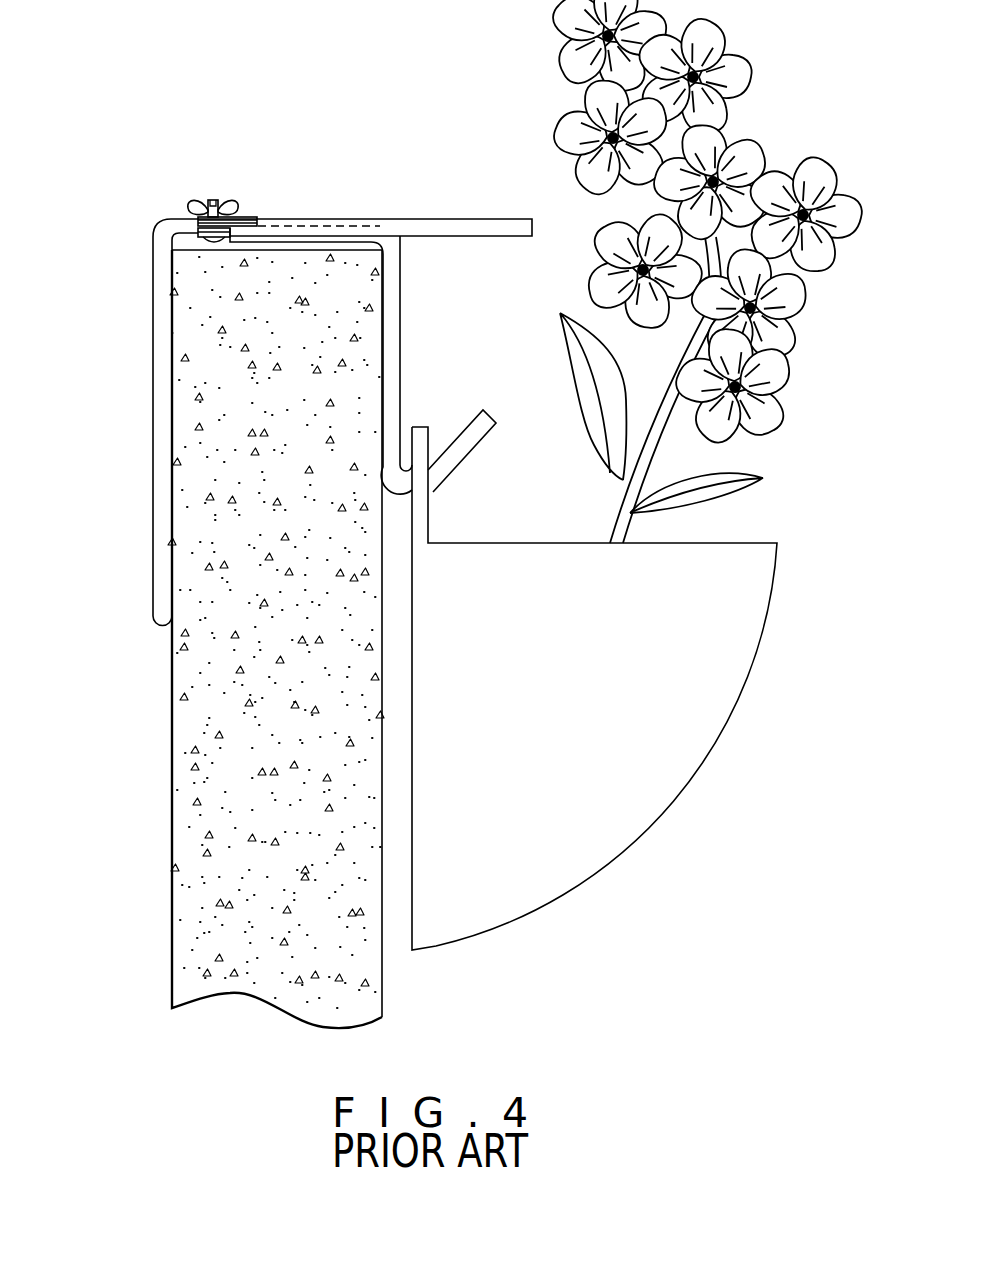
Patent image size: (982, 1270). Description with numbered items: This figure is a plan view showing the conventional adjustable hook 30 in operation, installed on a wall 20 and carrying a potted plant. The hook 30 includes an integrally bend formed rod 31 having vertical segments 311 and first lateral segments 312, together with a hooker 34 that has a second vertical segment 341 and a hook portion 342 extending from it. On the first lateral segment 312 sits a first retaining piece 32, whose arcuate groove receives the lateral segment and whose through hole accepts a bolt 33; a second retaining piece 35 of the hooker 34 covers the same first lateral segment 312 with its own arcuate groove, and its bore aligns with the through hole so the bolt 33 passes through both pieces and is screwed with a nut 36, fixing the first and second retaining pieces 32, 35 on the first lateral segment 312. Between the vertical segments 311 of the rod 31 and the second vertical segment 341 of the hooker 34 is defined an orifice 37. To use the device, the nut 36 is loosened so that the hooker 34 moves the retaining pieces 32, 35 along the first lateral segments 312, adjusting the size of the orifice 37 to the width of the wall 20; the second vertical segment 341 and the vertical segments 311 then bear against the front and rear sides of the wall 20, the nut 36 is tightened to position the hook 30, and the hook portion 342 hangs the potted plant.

The wall 20 is at (193, 734).
The adjustable hook 30 is at (411, 508).
The rod 31 is at (289, 360).
The vertical segments 311 is at (163, 463).
The first lateral segments 312 is at (482, 227).
The first retaining piece 32 is at (197, 242).
The bolt 33 is at (213, 200).
The hooker 34 is at (503, 589).
The second vertical segment 341 is at (393, 297).
The hook portion 342 is at (465, 447).
The second retaining piece 35 is at (247, 219).
The nut 36 is at (193, 207).
The orifice 37 is at (355, 245).